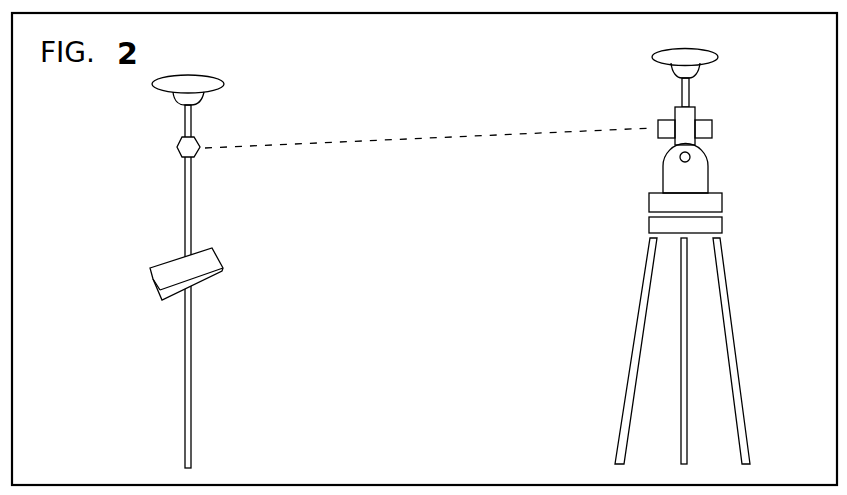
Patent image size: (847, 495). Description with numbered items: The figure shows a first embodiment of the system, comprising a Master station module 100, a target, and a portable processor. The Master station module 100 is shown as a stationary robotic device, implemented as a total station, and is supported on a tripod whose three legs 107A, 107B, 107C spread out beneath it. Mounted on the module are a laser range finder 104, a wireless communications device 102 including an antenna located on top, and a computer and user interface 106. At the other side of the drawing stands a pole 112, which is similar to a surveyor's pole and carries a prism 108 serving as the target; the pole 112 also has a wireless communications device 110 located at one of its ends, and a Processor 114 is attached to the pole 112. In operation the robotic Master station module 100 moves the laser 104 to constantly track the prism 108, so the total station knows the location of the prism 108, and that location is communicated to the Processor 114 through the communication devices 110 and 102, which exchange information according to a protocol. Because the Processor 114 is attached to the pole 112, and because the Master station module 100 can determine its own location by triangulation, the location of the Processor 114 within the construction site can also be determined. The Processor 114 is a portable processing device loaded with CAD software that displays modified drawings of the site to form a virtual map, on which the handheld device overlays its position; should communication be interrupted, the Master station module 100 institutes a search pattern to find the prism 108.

The Master station module 100 is at (712, 243).
The wireless communications device 102 is at (687, 45).
The laser range finder 104 is at (712, 125).
The computer and user interface 106 is at (708, 170).
The tripod leg 107A is at (733, 328).
The tripod leg 107B is at (687, 389).
The tripod leg 107C is at (630, 408).
The prism 108 is at (197, 138).
The wireless communications device 110 is at (225, 82).
The pole 112 is at (192, 365).
The Processor 114 is at (222, 254).